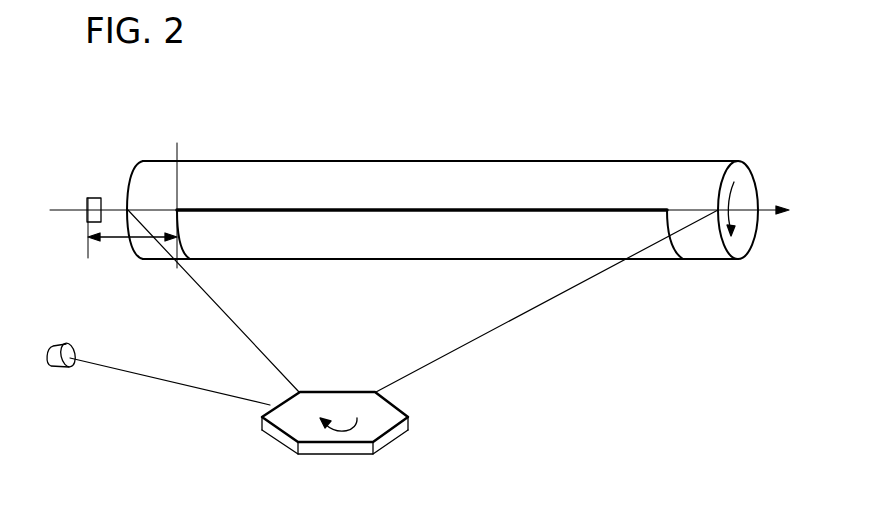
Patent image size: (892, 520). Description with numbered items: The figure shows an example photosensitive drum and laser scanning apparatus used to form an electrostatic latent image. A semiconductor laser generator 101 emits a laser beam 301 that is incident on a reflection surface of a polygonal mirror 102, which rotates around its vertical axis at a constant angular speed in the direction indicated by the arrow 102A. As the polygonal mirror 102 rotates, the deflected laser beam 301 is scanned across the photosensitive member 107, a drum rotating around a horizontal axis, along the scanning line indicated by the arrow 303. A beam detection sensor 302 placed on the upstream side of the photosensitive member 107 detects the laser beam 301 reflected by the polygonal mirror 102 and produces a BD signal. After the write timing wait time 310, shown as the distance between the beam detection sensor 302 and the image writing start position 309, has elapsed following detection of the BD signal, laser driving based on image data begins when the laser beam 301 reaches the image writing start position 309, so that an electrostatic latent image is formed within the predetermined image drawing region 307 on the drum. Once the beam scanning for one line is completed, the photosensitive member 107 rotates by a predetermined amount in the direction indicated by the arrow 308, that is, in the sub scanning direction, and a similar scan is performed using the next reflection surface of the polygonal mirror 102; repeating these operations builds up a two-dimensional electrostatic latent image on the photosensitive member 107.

The photosensitive member 107 is at (318, 170).
The image drawing region 307 is at (416, 208).
The image writing start position 309 is at (178, 205).
The scanning line 303 is at (766, 207).
The rotation direction of the photosensitive member 308 is at (732, 181).
The beam detection (BD) sensor 302 is at (94, 196).
The write timing wait time 310 is at (115, 244).
The semiconductor laser generator 101 is at (64, 340).
The laser beam 301 is at (222, 393).
The polygonal mirror 102 is at (393, 411).
The rotation direction of the polygonal mirror 102A is at (354, 438).